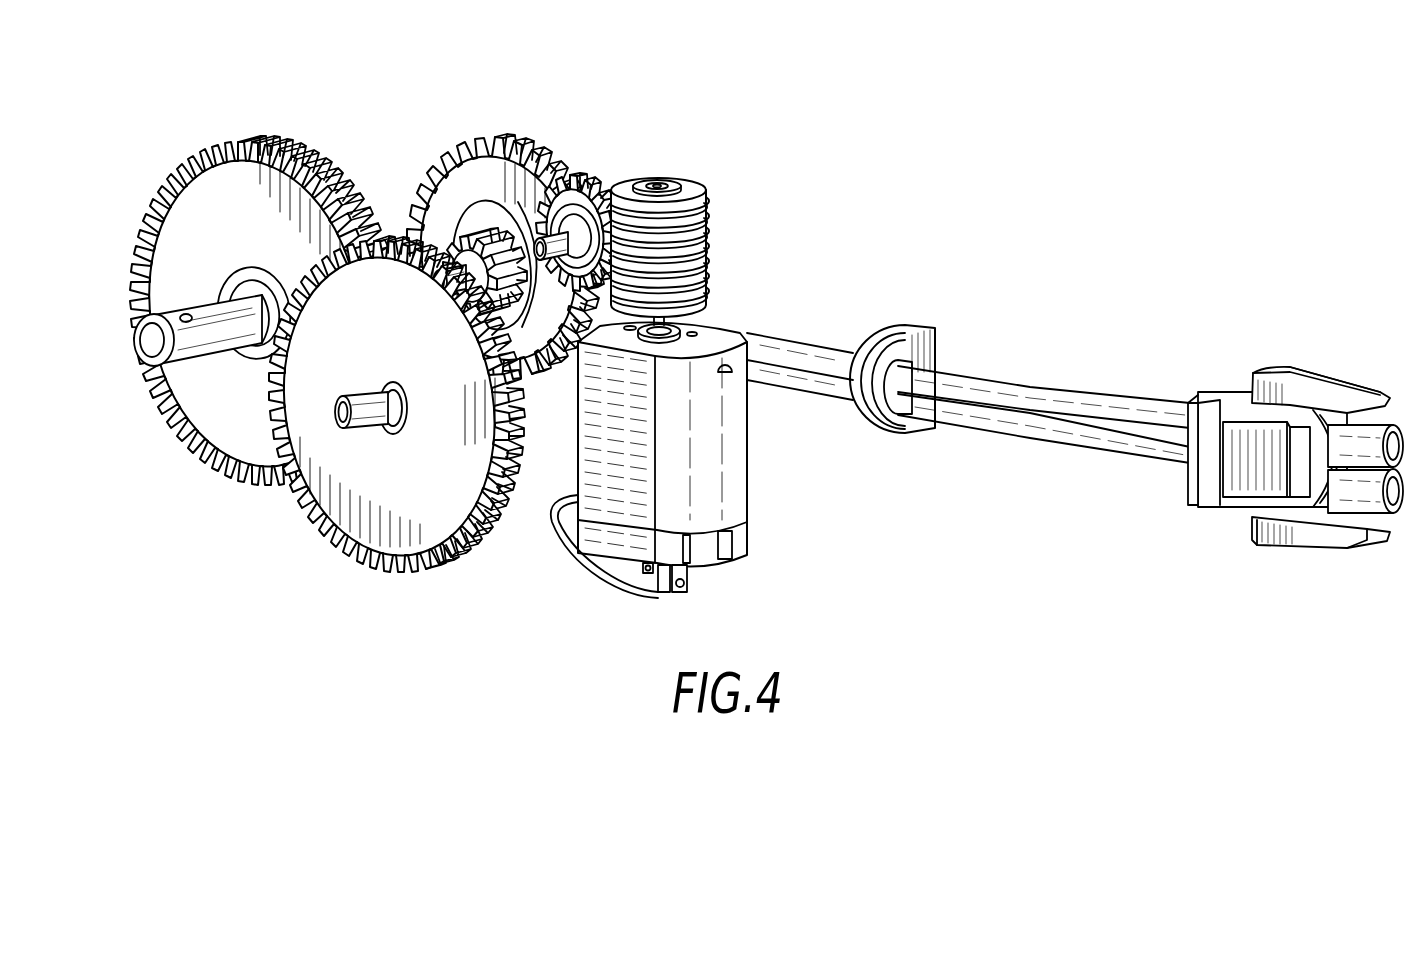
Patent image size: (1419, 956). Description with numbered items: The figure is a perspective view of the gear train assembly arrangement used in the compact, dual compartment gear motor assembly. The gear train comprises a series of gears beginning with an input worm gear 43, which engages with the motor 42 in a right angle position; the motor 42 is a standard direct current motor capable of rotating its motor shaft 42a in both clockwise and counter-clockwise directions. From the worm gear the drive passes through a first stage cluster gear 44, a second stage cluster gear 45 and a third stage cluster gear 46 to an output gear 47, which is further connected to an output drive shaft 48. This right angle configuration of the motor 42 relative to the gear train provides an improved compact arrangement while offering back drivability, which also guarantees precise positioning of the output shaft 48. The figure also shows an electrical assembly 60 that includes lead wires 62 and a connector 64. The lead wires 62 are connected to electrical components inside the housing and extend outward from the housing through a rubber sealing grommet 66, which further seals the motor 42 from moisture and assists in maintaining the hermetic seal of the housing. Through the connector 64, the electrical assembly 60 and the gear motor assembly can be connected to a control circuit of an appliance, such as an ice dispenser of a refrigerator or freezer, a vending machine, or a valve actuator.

The motor 42 is at (740, 460).
The motor shaft 42a is at (657, 178).
The input worm gear 43 is at (708, 243).
The first stage cluster gear 44 is at (597, 172).
The second stage cluster gear 45 is at (480, 140).
The third stage cluster gear 46 is at (378, 568).
The output gear 47 is at (220, 475).
The output drive shaft 48 is at (203, 327).
The electrical assembly 60 is at (1220, 397).
The lead wires 62 is at (1100, 452).
The connector 64 is at (1320, 385).
The rubber sealing grommet 66 is at (900, 330).